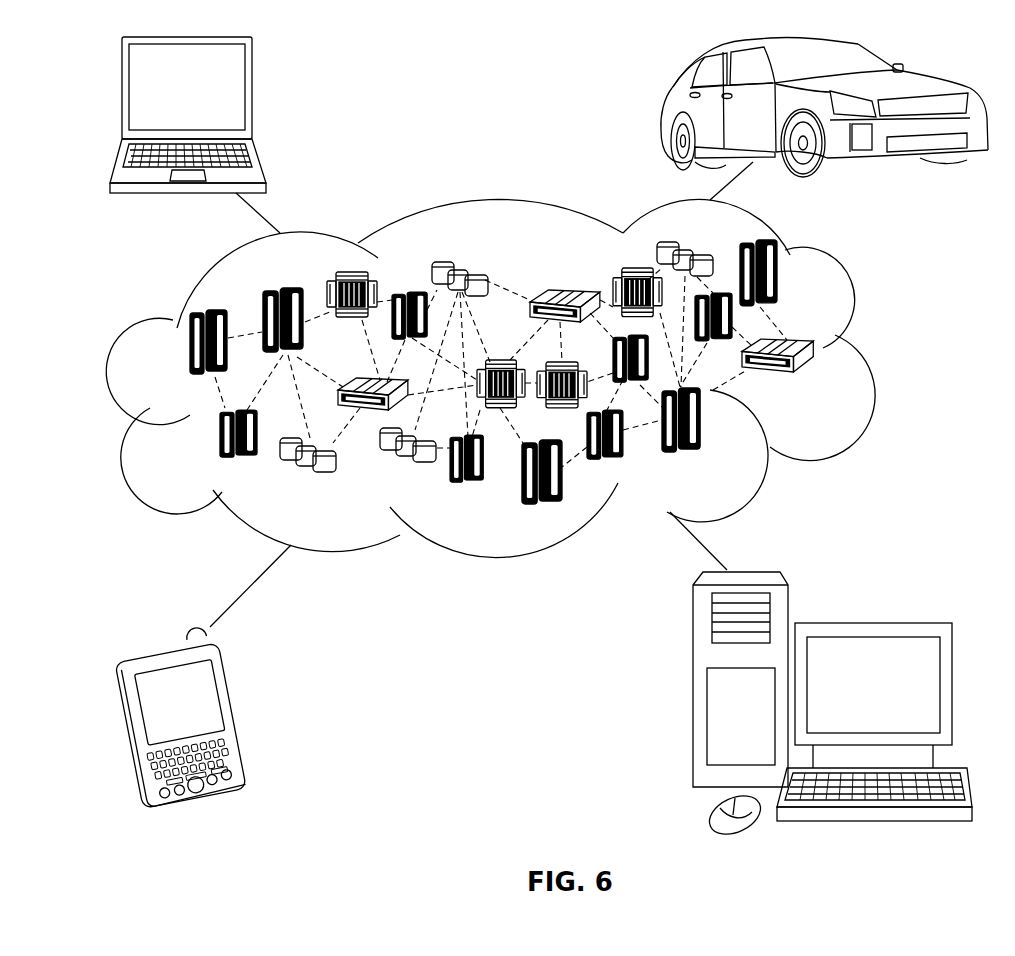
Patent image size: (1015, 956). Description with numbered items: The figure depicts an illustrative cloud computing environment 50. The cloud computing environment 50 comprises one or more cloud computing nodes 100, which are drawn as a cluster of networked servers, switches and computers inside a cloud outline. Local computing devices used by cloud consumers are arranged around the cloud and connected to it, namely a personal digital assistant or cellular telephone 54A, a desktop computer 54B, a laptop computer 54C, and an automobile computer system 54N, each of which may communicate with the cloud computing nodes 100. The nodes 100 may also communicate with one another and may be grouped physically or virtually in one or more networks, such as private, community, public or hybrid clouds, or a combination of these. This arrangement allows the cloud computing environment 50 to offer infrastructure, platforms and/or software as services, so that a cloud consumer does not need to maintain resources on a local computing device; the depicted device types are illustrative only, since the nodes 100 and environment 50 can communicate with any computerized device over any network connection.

The cloud computing environment 50 is at (872, 352).
The cloud computing nodes 100 is at (816, 380).
The personal digital assistant (PDA) or cellular telephone 54A is at (246, 712).
The desktop computer 54B is at (870, 623).
The laptop computer 54C is at (255, 98).
The automobile computer system 54N is at (666, 108).